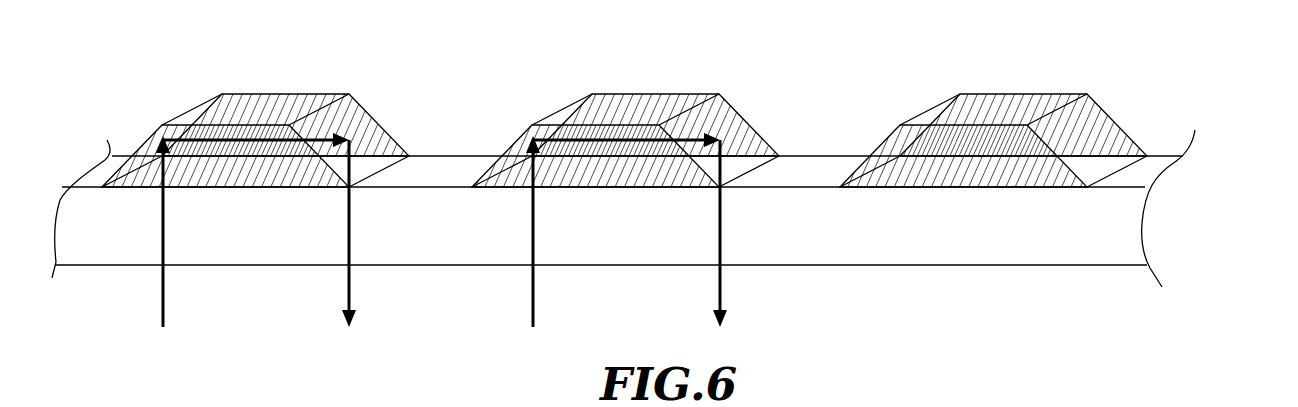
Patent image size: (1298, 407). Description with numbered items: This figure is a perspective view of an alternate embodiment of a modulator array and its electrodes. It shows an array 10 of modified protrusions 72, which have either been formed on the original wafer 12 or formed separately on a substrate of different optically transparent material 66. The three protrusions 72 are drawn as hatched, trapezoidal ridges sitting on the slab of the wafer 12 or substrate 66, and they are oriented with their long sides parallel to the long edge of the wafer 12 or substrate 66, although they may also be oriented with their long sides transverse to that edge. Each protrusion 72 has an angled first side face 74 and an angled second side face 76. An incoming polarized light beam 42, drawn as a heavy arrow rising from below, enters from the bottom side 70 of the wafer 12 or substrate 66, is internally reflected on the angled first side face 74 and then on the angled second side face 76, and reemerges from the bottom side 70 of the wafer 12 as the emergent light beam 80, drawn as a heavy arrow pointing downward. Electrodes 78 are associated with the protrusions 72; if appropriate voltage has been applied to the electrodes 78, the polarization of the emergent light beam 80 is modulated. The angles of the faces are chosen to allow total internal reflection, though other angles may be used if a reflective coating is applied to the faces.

The array 10 is at (788, 106).
The wafer 12 is at (658, 245).
The substrate of different optically transparent material 66 is at (1090, 222).
The bottom side 70 is at (898, 271).
The modified protrusions 72 is at (1023, 112).
The angled first side face 74 is at (187, 118).
The angled second side face 76 is at (353, 118).
The electrodes 78 is at (984, 87).
The incoming polarized light beam 42 is at (165, 295).
The emergent light beam 80 is at (351, 277).